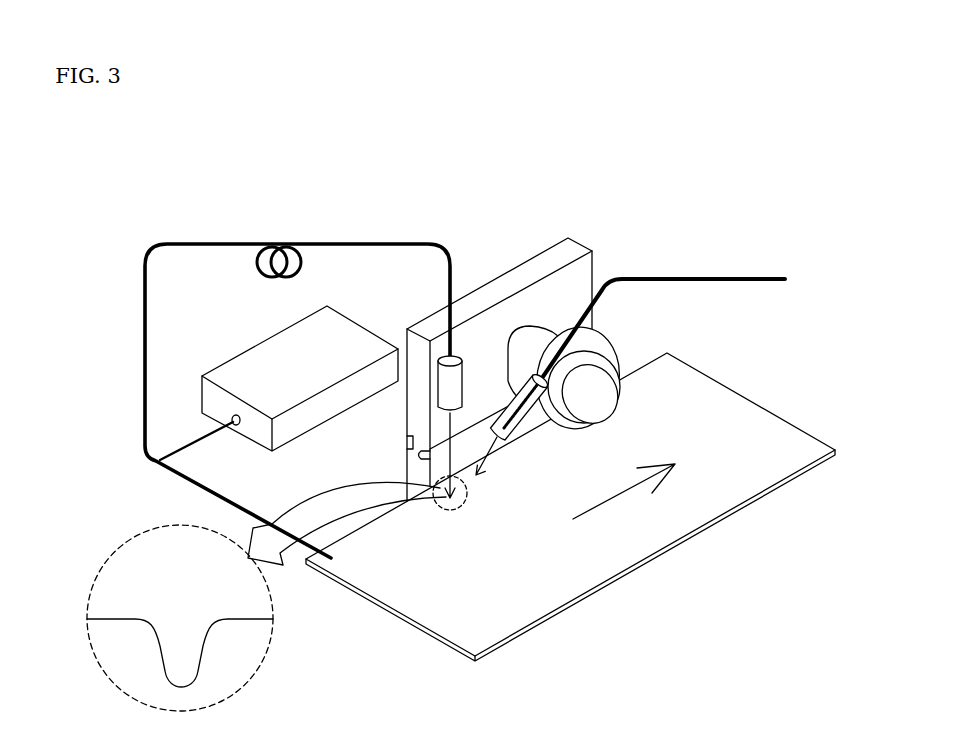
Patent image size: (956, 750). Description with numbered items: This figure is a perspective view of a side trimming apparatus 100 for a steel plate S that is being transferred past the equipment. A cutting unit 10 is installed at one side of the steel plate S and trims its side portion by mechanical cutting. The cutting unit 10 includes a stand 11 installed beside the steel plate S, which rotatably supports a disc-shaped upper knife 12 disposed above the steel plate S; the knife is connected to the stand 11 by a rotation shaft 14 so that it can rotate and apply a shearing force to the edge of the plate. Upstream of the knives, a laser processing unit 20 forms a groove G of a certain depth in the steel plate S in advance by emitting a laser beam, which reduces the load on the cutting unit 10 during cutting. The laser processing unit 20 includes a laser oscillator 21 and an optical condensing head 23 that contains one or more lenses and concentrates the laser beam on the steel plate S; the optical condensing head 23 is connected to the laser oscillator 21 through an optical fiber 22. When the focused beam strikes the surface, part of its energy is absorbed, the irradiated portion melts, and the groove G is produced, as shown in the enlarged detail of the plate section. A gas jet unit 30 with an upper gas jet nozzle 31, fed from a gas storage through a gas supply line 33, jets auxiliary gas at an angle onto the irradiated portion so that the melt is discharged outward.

The laser processing system 100 is at (127, 154).
The cutting unit 10 is at (563, 205).
The stand 11 is at (580, 247).
The upper knife 12 is at (603, 345).
The rotation shaft 14 is at (523, 345).
The laser processing unit 20 is at (233, 222).
The laser oscillator 21 is at (258, 355).
The optical fiber 22 is at (340, 242).
The optical condensing head 23 is at (447, 391).
The gas jet unit 30 is at (532, 216).
The upper gas jet nozzle 31 is at (515, 403).
The gas supply line 33 is at (582, 318).
The steel plate S is at (730, 402).
The groove G is at (179, 657).